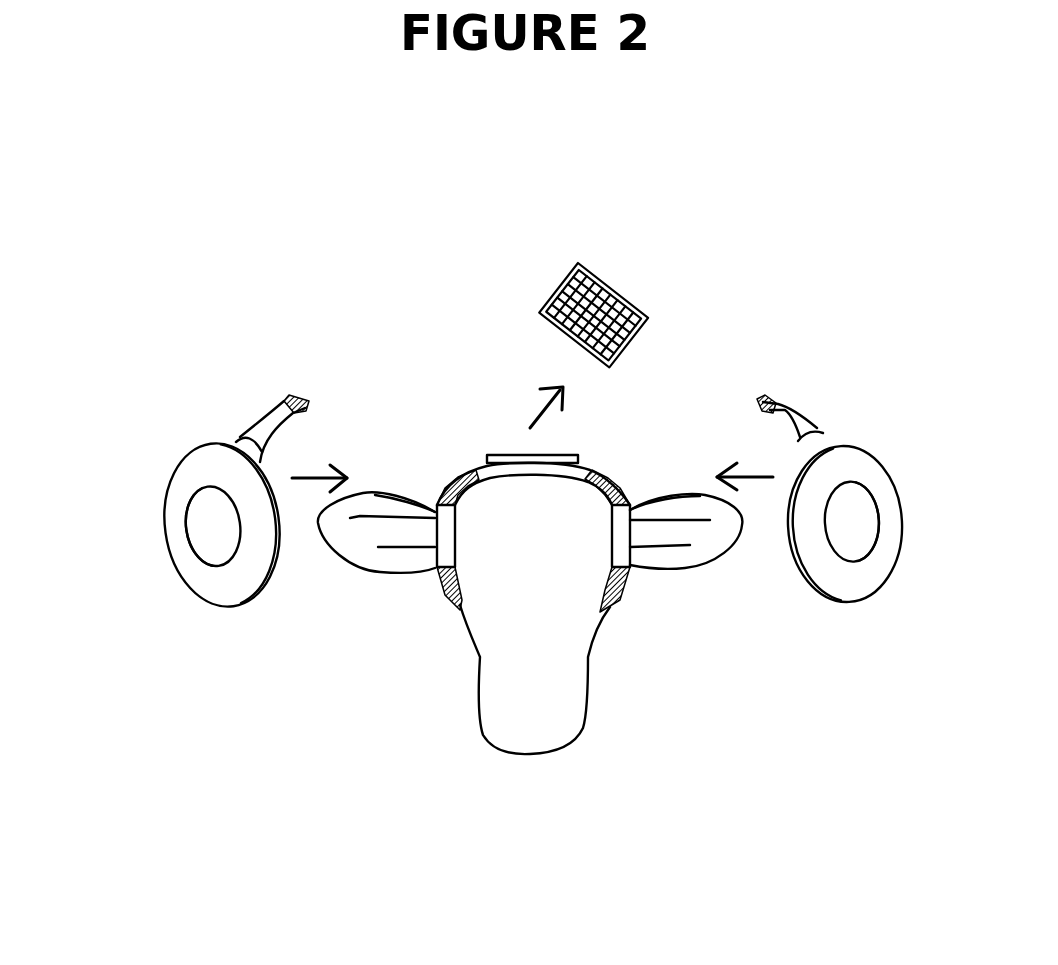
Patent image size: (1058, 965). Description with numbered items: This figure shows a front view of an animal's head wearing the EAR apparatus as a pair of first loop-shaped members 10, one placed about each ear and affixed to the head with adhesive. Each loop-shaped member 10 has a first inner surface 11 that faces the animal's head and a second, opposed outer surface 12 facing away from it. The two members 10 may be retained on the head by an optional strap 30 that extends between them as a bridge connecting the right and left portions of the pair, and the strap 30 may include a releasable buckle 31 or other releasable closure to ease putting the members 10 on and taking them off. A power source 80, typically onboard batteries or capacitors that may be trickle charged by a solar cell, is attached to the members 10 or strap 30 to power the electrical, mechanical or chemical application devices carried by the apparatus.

The first loop-shaped member 10 is at (157, 468).
The first inner surface 11 is at (398, 617).
The second outer surface 12 is at (668, 607).
The strap 30 is at (262, 417).
The releasable buckle 31 is at (292, 397).
The power source 80 is at (505, 450).